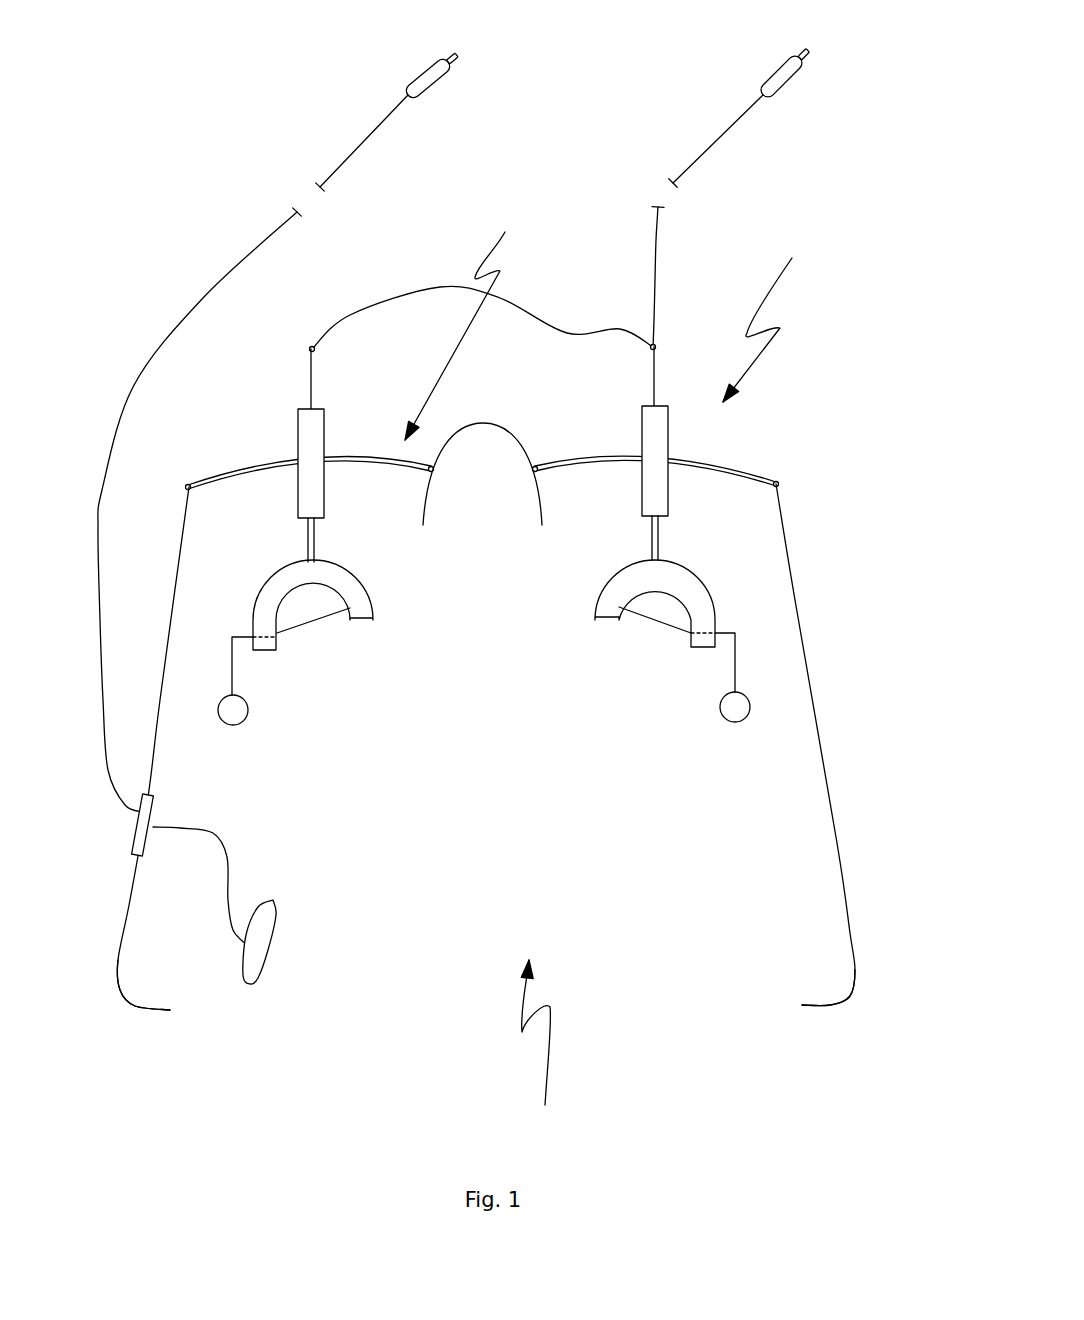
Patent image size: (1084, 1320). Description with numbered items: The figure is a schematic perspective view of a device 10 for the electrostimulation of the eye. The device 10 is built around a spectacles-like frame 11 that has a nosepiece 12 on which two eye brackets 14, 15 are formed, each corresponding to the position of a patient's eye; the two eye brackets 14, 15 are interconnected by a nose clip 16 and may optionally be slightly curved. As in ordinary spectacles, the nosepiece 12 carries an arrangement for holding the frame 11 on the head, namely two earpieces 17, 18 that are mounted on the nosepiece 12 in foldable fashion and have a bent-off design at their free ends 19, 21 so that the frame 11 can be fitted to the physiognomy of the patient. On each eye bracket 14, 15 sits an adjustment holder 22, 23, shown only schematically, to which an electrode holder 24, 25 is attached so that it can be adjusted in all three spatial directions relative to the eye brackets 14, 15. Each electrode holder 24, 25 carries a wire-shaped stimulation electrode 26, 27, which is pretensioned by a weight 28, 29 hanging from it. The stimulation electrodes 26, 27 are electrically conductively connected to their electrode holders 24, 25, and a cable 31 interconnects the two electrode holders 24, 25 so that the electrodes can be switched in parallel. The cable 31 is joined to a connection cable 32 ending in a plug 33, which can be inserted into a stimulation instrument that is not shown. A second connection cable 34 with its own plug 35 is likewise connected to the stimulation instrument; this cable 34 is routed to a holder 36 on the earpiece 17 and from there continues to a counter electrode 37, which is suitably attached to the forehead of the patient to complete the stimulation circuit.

The device 10 is at (538, 1049).
The spectacles-like frame 11 is at (764, 317).
The nosepiece 12 is at (465, 324).
The eye bracket 14 is at (385, 463).
The eye bracket 15 is at (578, 463).
The nose clip 16 is at (535, 490).
The earpiece 17 is at (152, 750).
The earpiece 18 is at (837, 843).
The free end 19 is at (138, 1012).
The free end 21 is at (848, 987).
The adjustment holder 22 is at (310, 420).
The adjustment holder 23 is at (655, 433).
The electrode holder 24 is at (278, 590).
The electrode holder 25 is at (690, 590).
The stimulation electrode 26 is at (307, 628).
The stimulation electrode 27 is at (660, 630).
The weight 28 is at (240, 710).
The weight 29 is at (735, 707).
The cable 31 is at (527, 315).
The connection cable 32 is at (657, 277).
The plug 33 is at (773, 75).
The second connection cable 34 is at (204, 298).
The plug 35 is at (435, 87).
The holder 36 is at (142, 832).
The counter electrode 37 is at (270, 947).